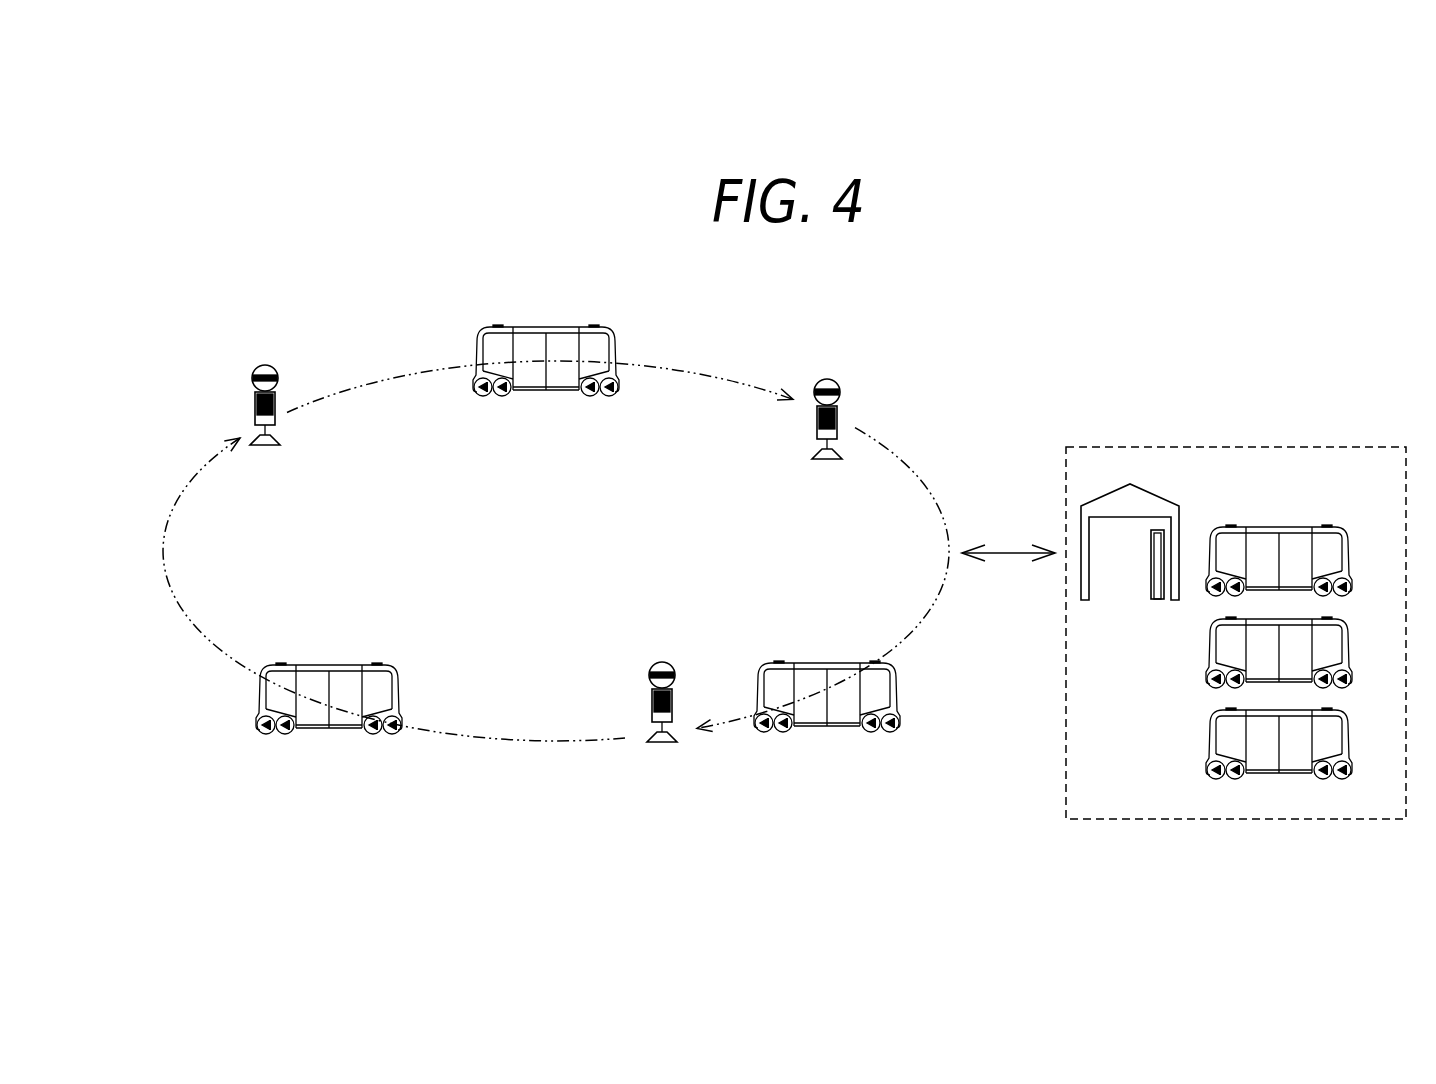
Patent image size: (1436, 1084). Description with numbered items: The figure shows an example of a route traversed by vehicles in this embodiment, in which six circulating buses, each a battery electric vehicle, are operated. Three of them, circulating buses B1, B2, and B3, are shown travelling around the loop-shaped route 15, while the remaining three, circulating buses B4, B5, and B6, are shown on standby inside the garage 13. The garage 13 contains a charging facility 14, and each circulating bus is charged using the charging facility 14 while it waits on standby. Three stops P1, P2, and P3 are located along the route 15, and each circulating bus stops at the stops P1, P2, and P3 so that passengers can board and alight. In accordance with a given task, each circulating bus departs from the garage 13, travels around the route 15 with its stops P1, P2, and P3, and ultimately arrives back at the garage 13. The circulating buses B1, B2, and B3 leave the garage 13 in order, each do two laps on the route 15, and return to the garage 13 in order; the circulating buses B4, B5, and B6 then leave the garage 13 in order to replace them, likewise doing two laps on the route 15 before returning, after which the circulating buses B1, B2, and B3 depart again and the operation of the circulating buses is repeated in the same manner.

The route 15 is at (712, 356).
The garage 13 is at (1240, 447).
The charging facility 14 is at (1150, 568).
The circulating bus B1 is at (822, 659).
The circulating bus B2 is at (342, 661).
The circulating bus B3 is at (548, 323).
The circulating bus B4 is at (1353, 532).
The circulating bus B5 is at (1351, 623).
The circulating bus B6 is at (1351, 707).
The stop P1 is at (652, 663).
The stop P2 is at (274, 367).
The stop P3 is at (837, 382).